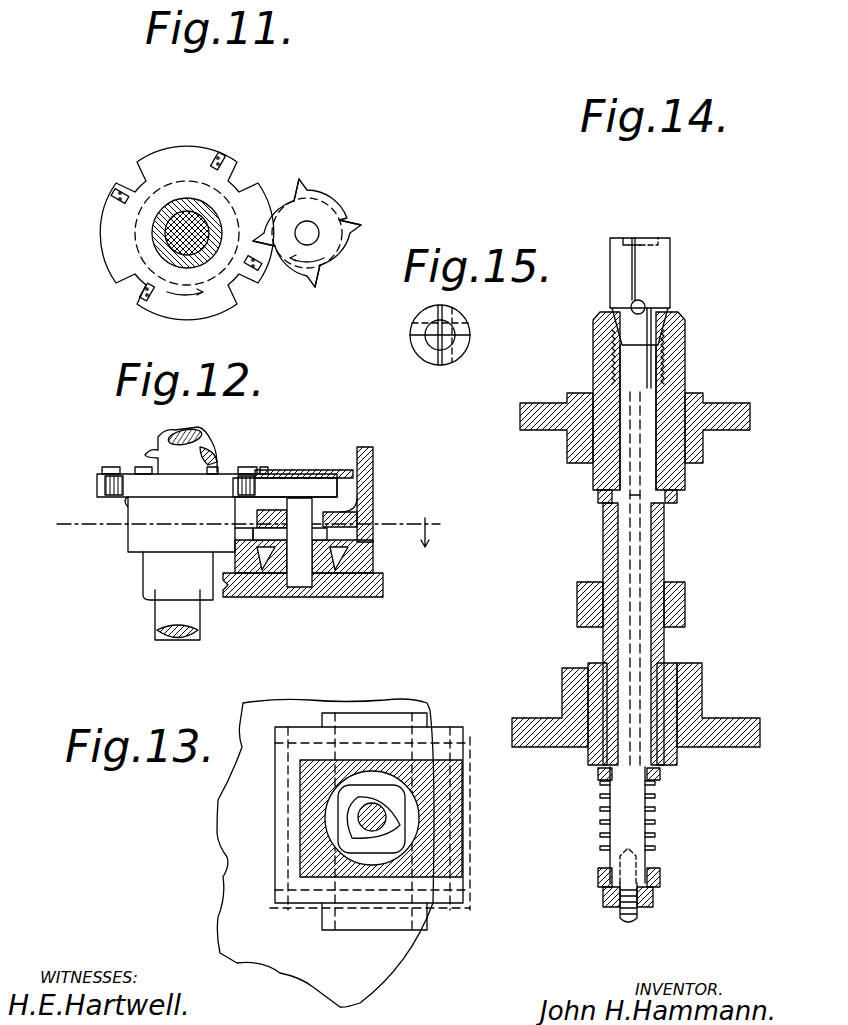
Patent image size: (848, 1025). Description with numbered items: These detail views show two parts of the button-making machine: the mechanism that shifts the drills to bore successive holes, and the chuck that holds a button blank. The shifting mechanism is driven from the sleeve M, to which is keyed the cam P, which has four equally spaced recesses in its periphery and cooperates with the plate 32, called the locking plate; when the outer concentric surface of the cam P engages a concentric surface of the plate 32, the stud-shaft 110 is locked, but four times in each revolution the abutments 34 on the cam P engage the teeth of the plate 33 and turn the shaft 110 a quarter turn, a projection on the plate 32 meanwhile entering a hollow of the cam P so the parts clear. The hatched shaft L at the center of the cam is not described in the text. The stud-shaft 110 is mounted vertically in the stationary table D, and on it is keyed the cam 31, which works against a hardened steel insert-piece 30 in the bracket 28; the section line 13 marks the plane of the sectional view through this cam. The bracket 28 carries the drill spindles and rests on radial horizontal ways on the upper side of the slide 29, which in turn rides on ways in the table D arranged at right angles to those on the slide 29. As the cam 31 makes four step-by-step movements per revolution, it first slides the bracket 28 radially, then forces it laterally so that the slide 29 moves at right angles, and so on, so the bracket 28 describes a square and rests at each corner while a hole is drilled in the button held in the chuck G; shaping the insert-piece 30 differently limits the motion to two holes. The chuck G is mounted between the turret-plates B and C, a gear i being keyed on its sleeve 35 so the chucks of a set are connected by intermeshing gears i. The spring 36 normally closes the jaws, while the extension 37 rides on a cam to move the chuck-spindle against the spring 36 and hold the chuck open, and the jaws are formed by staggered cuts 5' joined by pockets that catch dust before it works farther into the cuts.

In FIG. 11, the cam P is at (160, 157).
In FIG. 12, the cam P is at (100, 483).
In FIG. 11, the sleeve M is at (217, 218).
In FIG. 12, the sleeve M is at (157, 570).
In FIG. 11, the shaft L is at (170, 230).
In FIG. 12, the shaft L is at (167, 617).
In FIG. 11, the abutments 34 is at (222, 157).
In FIG. 11, the locking plate 32 is at (347, 207).
In FIG. 12, the locking plate 32 is at (298, 488).
In FIG. 11, the toothed plate 33 is at (312, 192).
In FIG. 12, the toothed plate 33 is at (260, 473).
In FIG. 11, the stud-shaft 110 is at (297, 237).
In FIG. 12, the stud-shaft 110 is at (302, 573).
In FIG. 13, the stud-shaft 110 is at (360, 822).
In FIG. 12, the section line 13 is at (267, 526).
In FIG. 12, the bracket 28 is at (373, 483).
In FIG. 13, the bracket 28 is at (447, 813).
In FIG. 12, the slide 29 is at (373, 560).
In FIG. 13, the slide 29 is at (390, 925).
In FIG. 12, the stationary table D is at (373, 597).
In FIG. 13, the stationary table D is at (340, 983).
In FIG. 12, the hardened steel insert-piece 30 is at (223, 577).
In FIG. 13, the hardened steel insert-piece 30 is at (407, 823).
In FIG. 12, the cam 31 is at (297, 532).
In FIG. 13, the cam 31 is at (413, 857).
In FIG. 14, the chuck G is at (670, 263).
In FIG. 15, the chuck G is at (468, 330).
In FIG. 14, the staggered cuts 5' is at (653, 332).
In FIG. 14, the turret-plate B is at (723, 403).
In FIG. 14, the sleeve 35 is at (657, 533).
In FIG. 14, the gear i is at (677, 603).
In FIG. 14, the turret-plate C is at (710, 717).
In FIG. 14, the spring 36 is at (657, 813).
In FIG. 14, the extension 37 is at (637, 915).